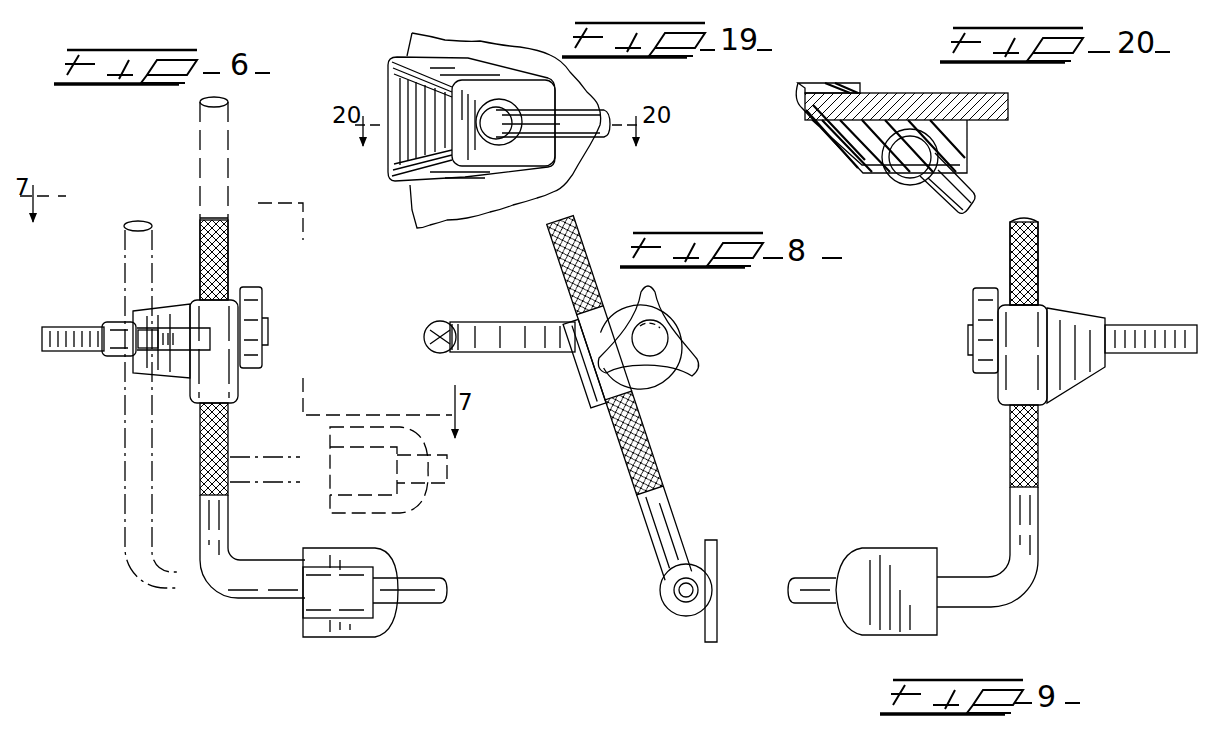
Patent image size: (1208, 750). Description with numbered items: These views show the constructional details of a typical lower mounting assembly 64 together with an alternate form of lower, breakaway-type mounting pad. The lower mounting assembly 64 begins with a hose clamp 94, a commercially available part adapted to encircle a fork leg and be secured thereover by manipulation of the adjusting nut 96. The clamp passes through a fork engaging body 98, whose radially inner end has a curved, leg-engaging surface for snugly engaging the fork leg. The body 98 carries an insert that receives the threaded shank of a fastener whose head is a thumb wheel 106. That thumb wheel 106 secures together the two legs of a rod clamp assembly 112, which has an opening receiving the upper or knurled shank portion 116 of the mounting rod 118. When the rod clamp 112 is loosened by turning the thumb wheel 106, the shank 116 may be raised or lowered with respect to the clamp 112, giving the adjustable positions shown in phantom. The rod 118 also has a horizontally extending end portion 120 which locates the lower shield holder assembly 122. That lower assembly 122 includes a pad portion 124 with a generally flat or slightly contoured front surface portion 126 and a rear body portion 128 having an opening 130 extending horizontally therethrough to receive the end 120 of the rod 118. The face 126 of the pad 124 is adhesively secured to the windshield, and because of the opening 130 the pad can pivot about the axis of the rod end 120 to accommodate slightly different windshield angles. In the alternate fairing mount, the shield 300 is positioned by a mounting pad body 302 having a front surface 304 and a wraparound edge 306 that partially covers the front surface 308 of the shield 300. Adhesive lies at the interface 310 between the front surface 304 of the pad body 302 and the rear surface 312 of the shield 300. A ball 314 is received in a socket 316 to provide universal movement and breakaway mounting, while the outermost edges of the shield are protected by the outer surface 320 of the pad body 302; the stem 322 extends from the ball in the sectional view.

In FIG. 6, the lower mounting assembly 64 is at (285, 352).
In FIG. 8, the lower mounting assembly 64 is at (552, 302).
In FIG. 9, the lower mounting assembly 64 is at (960, 330).
In FIG. 6, the hose clamp 94 is at (90, 327).
In FIG. 8, the hose clamp 94 is at (525, 352).
In FIG. 9, the hose clamp 94 is at (1180, 315).
In FIG. 6, the adjusting nut 96 is at (118, 322).
In FIG. 8, the adjusting nut 96 is at (432, 345).
In FIG. 6, the fork engaging body 98 is at (182, 310).
In FIG. 9, the fork engaging body 98 is at (1078, 316).
In FIG. 6, the thumb wheel 106 is at (260, 310).
In FIG. 8, the thumb wheel 106 is at (680, 350).
In FIG. 9, the thumb wheel 106 is at (983, 330).
In FIG. 6, the rod clamp assembly 112 is at (242, 383).
In FIG. 6, the knurled shank portion 116 is at (232, 257).
In FIG. 8, the knurled shank portion 116 is at (640, 438).
In FIG. 9, the knurled shank portion 116 is at (987, 412).
In FIG. 6, the mounting rod 118 is at (268, 556).
In FIG. 6, the horizontally extending end portion 120 is at (420, 600).
In FIG. 8, the horizontally extending end portion 120 is at (670, 588).
In FIG. 9, the horizontally extending end portion 120 is at (812, 590).
In FIG. 6, the lower shield holder assembly 122 is at (448, 552).
In FIG. 8, the lower shield holder assembly 122 is at (702, 540).
In FIG. 9, the lower shield holder assembly 122 is at (898, 637).
In FIG. 8, the pad portion 124 is at (708, 630).
In FIG. 8, the front surface portion 126 is at (717, 580).
In FIG. 9, the front surface portion 126 is at (890, 570).
In FIG. 8, the rear body portion 128 is at (676, 596).
In FIG. 8, the opening 130 is at (690, 612).
In FIG. 19, the shield 300 is at (478, 57).
In FIG. 20, the shield 300 is at (885, 84).
In FIG. 20, the mounting pad body 302 is at (958, 149).
In FIG. 20, the front surface 304 is at (980, 96).
In FIG. 20, the wraparound edge 306 is at (840, 83).
In FIG. 20, the front surface of the shield 308 is at (912, 92).
In FIG. 20, the interface 310 is at (840, 138).
In FIG. 20, the rear surface of the shield 312 is at (985, 122).
In FIG. 20, the ball 314 is at (908, 182).
In FIG. 20, the socket 316 is at (893, 180).
In FIG. 20, the outer surface 320 is at (800, 110).
In FIG. 20, the ball stem 322 is at (966, 190).